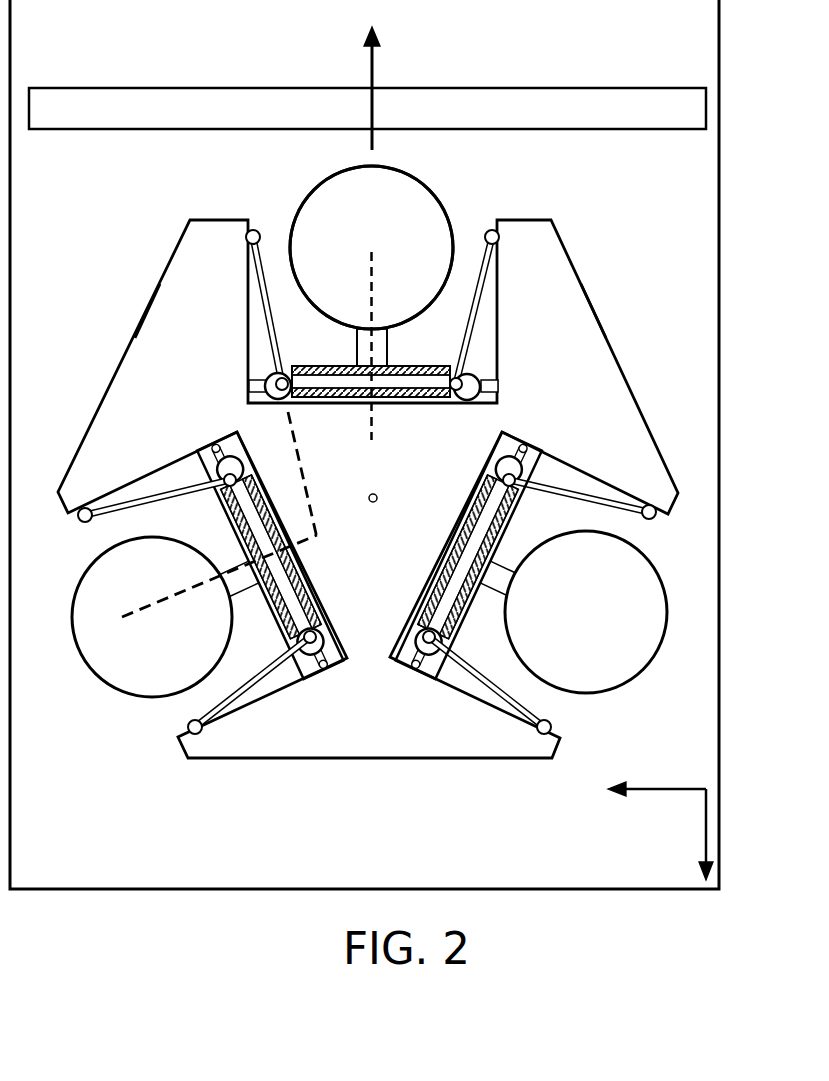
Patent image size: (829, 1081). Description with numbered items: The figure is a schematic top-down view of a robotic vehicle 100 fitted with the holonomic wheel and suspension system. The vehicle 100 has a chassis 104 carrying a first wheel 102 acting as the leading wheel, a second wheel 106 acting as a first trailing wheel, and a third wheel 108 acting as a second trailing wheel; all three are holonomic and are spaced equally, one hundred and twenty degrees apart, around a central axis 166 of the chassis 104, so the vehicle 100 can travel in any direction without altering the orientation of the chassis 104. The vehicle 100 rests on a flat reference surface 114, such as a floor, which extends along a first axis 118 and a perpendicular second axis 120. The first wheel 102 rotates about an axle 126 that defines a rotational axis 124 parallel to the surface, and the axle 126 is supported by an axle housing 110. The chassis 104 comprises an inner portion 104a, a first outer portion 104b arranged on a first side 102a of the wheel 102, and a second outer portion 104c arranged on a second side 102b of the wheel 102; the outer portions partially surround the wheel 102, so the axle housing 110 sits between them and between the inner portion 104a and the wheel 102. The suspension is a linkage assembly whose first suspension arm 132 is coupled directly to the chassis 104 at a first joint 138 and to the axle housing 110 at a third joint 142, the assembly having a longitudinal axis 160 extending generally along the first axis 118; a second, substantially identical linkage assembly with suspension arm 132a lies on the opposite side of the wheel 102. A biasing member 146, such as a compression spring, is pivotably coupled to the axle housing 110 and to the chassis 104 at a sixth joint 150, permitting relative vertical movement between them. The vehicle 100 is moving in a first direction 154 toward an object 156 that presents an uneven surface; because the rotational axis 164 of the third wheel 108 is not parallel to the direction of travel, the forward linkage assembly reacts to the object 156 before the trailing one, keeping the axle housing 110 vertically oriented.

The vehicle 100 is at (106, 208).
The first wheel 102 is at (350, 172).
The first side of the wheel 102a is at (293, 239).
The second side of the wheel 102b is at (450, 224).
The chassis 104 is at (118, 381).
The inner portion 104a is at (462, 408).
The first outer portion 104b is at (173, 302).
The second outer portion 104c is at (556, 298).
The second wheel 106 is at (658, 570).
The third wheel 108 is at (77, 583).
The axle housing 110 is at (406, 338).
The reference surface 114 is at (721, 183).
The first axis 118 is at (705, 836).
The second axis 120 is at (674, 788).
The rotational axis 124 is at (370, 278).
The axle 126 is at (390, 336).
The first suspension arm 132 is at (250, 260).
The suspension arm of second linkage assembly 132a is at (494, 262).
The first joint 138 is at (253, 230).
The third joint 142 is at (310, 378).
The biasing member 146 is at (268, 372).
The sixth joint 150 is at (252, 384).
The first direction 154 is at (374, 63).
The object 156 is at (603, 88).
The longitudinal axis of the linkage assembly 160 is at (320, 433).
The rotational axis of the third wheel 164 is at (158, 607).
The central axis 166 is at (375, 497).